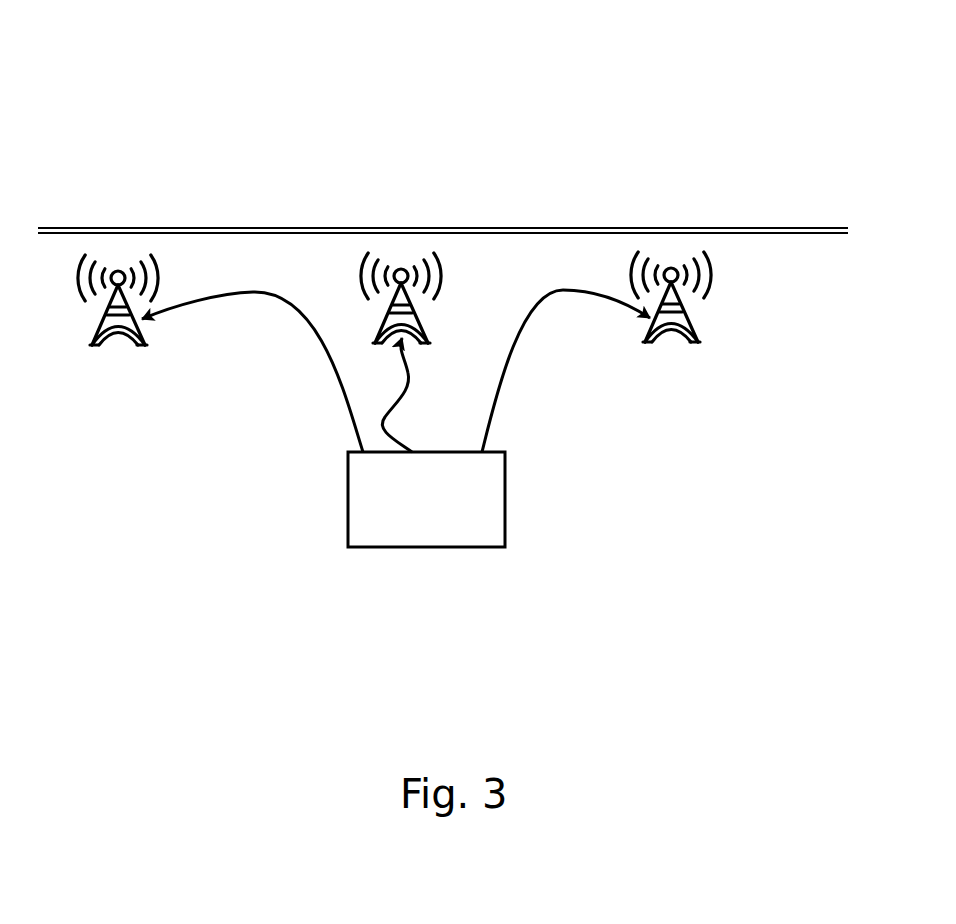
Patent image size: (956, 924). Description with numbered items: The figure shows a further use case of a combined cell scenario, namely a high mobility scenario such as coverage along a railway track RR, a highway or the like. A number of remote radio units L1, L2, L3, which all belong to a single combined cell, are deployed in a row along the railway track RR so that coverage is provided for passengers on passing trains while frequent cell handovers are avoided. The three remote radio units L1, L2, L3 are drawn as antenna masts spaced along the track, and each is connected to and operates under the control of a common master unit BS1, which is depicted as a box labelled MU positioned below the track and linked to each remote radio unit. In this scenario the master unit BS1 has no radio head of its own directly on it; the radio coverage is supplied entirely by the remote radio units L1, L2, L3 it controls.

The railway track RR is at (268, 228).
The remote radio unit L1 is at (118, 248).
The remote radio unit L2 is at (401, 250).
The remote radio unit L3 is at (670, 248).
The management unit MU is at (426, 499).
The master unit BS1 is at (396, 481).